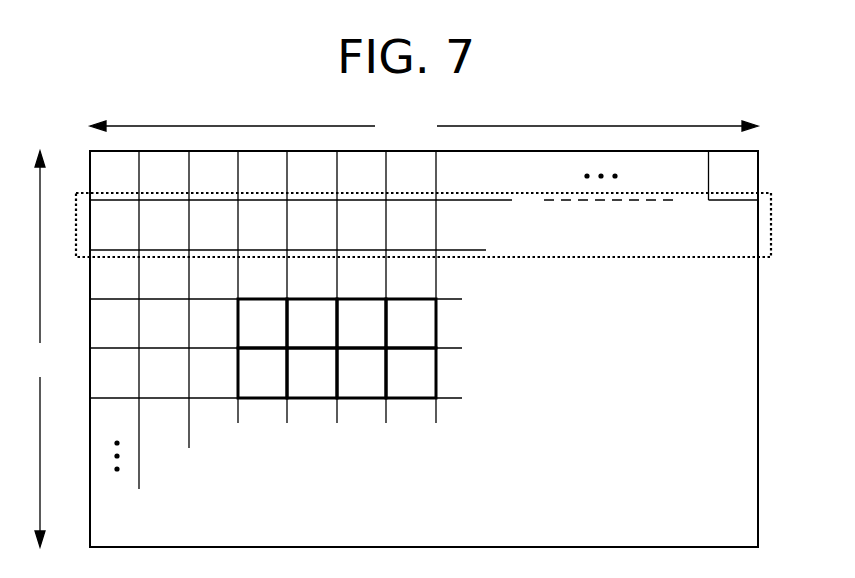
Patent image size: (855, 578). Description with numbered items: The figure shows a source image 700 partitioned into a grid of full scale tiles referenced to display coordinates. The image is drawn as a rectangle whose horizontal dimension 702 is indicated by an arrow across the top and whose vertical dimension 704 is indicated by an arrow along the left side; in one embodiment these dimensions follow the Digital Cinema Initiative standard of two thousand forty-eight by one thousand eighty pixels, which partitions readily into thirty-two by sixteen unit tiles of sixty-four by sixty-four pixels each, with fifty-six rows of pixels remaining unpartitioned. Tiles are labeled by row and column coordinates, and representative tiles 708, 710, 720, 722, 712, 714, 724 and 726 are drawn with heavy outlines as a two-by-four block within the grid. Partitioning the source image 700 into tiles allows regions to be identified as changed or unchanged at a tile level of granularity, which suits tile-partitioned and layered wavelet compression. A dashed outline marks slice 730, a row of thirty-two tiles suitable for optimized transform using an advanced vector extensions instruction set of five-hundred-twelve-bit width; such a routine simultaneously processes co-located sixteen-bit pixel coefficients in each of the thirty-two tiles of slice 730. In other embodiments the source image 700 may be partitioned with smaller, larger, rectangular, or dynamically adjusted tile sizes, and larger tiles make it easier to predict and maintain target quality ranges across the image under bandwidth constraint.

The source image 700 is at (424, 349).
The horizontal dimension 702 is at (424, 126).
The vertical dimension 704 is at (39, 349).
The tile 708 is at (262, 323).
The tile 710 is at (312, 323).
The tile 712 is at (262, 373).
The tile 714 is at (312, 373).
The tile 720 is at (361, 323).
The tile 722 is at (411, 323).
The tile 724 is at (361, 373).
The tile 726 is at (411, 373).
The slice 730 is at (771, 257).